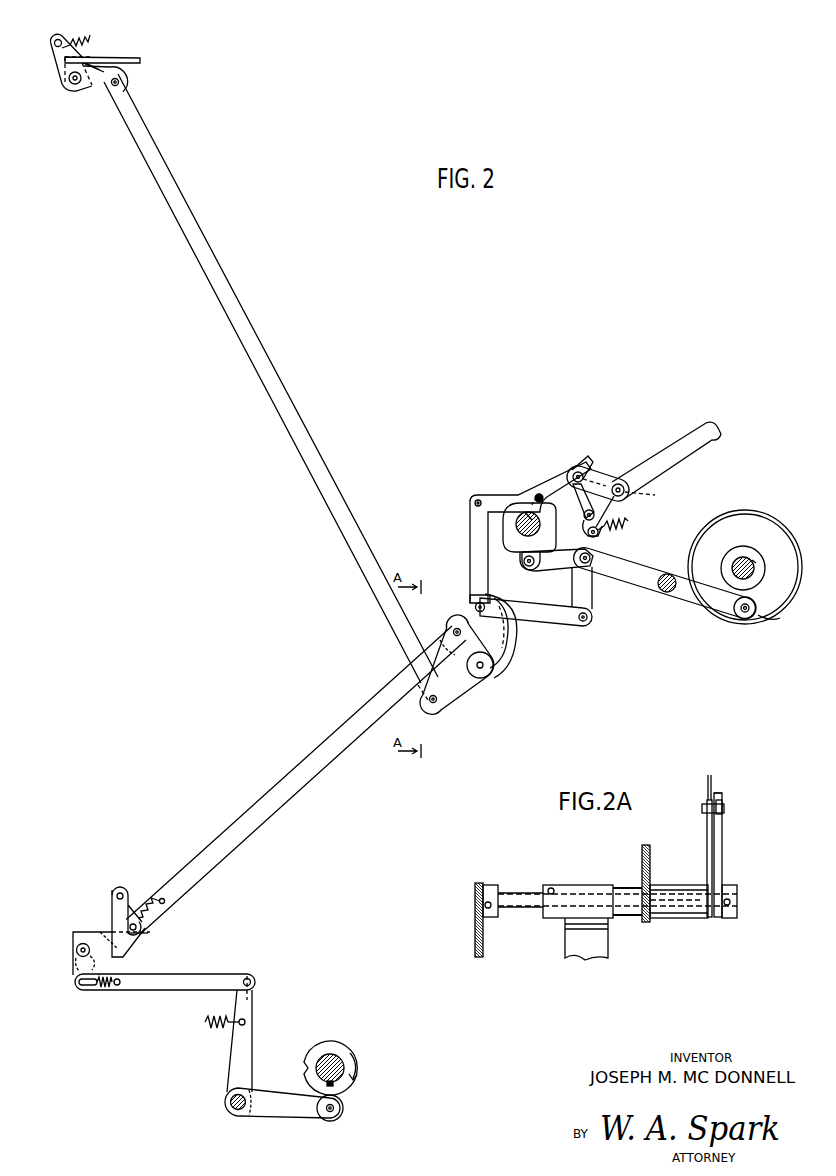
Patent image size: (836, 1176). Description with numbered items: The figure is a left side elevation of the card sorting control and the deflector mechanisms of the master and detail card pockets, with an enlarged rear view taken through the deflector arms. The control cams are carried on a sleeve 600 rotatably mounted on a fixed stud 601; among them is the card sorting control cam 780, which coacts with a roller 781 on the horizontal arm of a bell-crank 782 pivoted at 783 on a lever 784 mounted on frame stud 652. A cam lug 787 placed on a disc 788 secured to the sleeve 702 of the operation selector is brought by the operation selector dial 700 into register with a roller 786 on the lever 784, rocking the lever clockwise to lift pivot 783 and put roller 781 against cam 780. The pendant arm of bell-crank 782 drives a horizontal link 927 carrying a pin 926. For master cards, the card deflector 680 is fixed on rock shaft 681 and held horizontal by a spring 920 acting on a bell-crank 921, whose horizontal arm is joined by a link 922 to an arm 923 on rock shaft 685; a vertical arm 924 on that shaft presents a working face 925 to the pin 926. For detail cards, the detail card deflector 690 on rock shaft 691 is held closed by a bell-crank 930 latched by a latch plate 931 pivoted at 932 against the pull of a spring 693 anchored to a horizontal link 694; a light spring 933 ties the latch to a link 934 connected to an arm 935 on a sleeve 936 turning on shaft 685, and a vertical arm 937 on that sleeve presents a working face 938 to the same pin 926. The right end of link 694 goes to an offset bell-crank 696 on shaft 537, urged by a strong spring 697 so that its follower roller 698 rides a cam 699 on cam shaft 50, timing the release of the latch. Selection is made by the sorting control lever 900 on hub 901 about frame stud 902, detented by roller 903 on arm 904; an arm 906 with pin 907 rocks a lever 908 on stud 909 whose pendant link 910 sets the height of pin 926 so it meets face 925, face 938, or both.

In FIG. 2, the cam shaft 50 is at (328, 1060).
In FIG. 2, the transverse shaft 537 is at (230, 1106).
In FIG. 2, the sleeve 600 is at (515, 525).
In FIG. 2, the stud 601 is at (522, 518).
In FIG. 2, the frame stud 652 is at (665, 575).
In FIG. 2, the card deflector 680 is at (104, 57).
In FIG. 2, the transverse rock shaft 681 is at (72, 84).
In FIG. 2, the rock shaft 685 is at (485, 674).
In FIG. 2A, the rock shaft 685 is at (527, 903).
In FIG. 2, the detail card deflector 690 is at (88, 932).
In FIG. 2, the transverse rock shaft 691 is at (78, 956).
In FIG. 2, the spring 693 is at (104, 988).
In FIG. 2, the horizontal link 694 is at (150, 990).
In FIG. 2, the offset bell-crank 696 is at (252, 1034).
In FIG. 2, the spring 697 is at (216, 1028).
In FIG. 2, the follower roller 698 is at (340, 1118).
In FIG. 2, the cam 699 is at (358, 1064).
In FIG. 2, the operation selector dial 700 is at (748, 512).
In FIG. 2, the sleeve 702 is at (748, 565).
In FIG. 2, the card sorting control cam 780 is at (508, 540).
In FIG. 2, the roller 781 is at (530, 570).
In FIG. 2, the bell-crank 782 is at (594, 588).
In FIG. 2, the pivot 783 is at (591, 556).
In FIG. 2, the lever 784 is at (645, 584).
In FIG. 2, the roller 786 is at (740, 618).
In FIG. 2, the cam lug 787 is at (762, 618).
In FIG. 2, the disc 788 is at (730, 562).
In FIG. 2, the sorting control lever 900 is at (702, 430).
In FIG. 2, the hub 901 is at (655, 495).
In FIG. 2, the frame stud 902 is at (622, 484).
In FIG. 2, the detent roller 903 is at (590, 510).
In FIG. 2, the detent arm 904 is at (586, 526).
In FIG. 2, the arm 906 is at (600, 470).
In FIG. 2, the pin 907 is at (575, 468).
In FIG. 2, the lever 908 is at (536, 494).
In FIG. 2, the frame stud 909 is at (542, 495).
In FIG. 2, the pendant link 910 is at (470, 505).
In FIG. 2A, the pendant link 910 is at (707, 780).
In FIG. 2, the spring 920 is at (85, 36).
In FIG. 2, the bell-crank 921 is at (62, 58).
In FIG. 2, the link 922 is at (258, 355).
In FIG. 2A, the link 922 is at (478, 884).
In FIG. 2, the arm 923 is at (466, 692).
In FIG. 2A, the arm 923 is at (474, 934).
In FIG. 2, the vertical arm 924 is at (512, 650).
In FIG. 2A, the vertical arm 924 is at (722, 860).
In FIG. 2, the working face 925 is at (473, 593).
In FIG. 2A, the working face 925 is at (722, 805).
In FIG. 2, the pin 926 is at (475, 607).
In FIG. 2A, the pin 926 is at (724, 809).
In FIG. 2, the horizontal link 927 is at (581, 626).
In FIG. 2A, the horizontal link 927 is at (718, 794).
In FIG. 2, the bell-crank 930 is at (78, 985).
In FIG. 2, the latch plate 931 is at (112, 910).
In FIG. 2, the pivot 932 is at (117, 892).
In FIG. 2, the light spring 933 is at (150, 905).
In FIG. 2, the link 934 is at (222, 850).
In FIG. 2A, the link 934 is at (648, 866).
In FIG. 2, the arm 935 is at (440, 640).
In FIG. 2A, the arm 935 is at (643, 858).
In FIG. 2A, the sleeve 936 is at (707, 822).
In FIG. 2, the vertical arm 937 is at (505, 640).
In FIG. 2A, the vertical arm 937 is at (707, 853).
In FIG. 2, the working face 938 is at (450, 630).